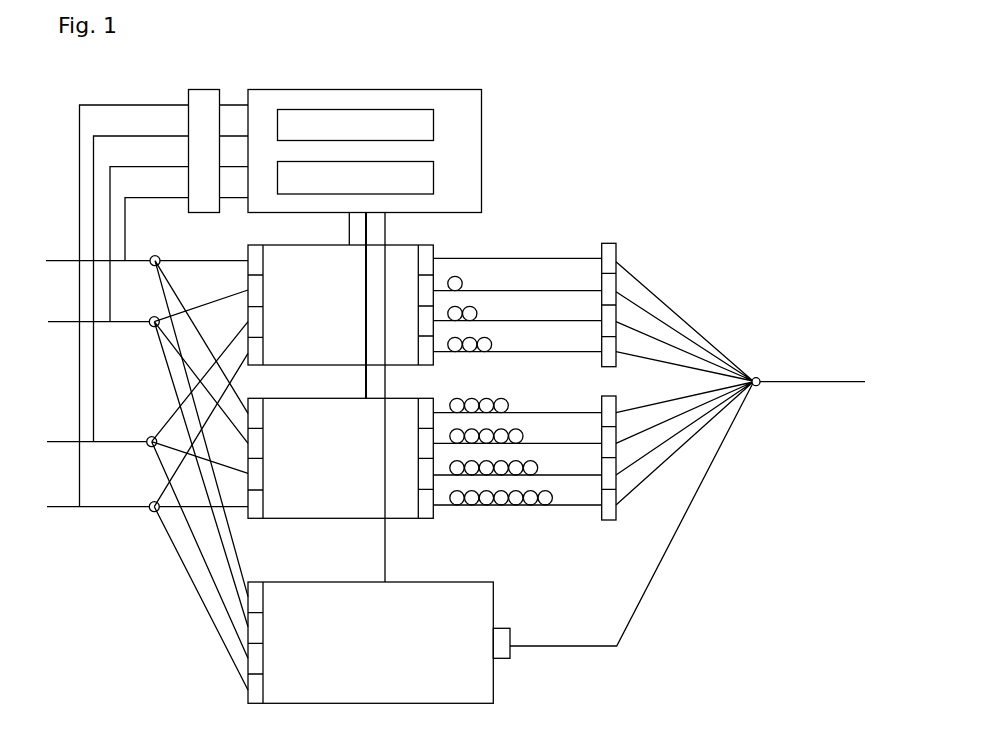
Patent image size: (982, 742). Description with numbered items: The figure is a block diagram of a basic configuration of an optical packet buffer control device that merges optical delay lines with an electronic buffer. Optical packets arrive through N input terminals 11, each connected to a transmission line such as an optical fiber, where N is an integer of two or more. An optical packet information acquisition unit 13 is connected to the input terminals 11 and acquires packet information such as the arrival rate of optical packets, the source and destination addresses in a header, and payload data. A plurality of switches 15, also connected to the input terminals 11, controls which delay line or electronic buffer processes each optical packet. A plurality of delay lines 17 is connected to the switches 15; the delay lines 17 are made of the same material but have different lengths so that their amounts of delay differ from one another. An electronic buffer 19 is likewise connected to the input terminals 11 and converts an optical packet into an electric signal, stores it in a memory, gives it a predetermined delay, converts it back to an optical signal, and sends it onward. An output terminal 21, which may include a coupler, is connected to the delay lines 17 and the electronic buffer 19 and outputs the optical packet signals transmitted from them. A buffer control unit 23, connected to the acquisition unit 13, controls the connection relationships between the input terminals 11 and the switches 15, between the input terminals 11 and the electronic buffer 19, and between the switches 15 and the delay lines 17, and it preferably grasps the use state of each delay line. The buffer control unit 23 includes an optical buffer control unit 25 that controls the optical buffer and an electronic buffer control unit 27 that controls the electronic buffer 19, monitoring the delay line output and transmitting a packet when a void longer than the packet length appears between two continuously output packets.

The input terminals 11 is at (160, 259).
The optical packet information acquisition unit 13 is at (220, 93).
The switches 15 is at (258, 260).
The delay lines 17 is at (523, 412).
The electronic buffer 19 is at (494, 605).
The output terminal 21 is at (762, 378).
The buffer control unit 23 is at (482, 103).
The optical buffer control unit 25 is at (434, 125).
The electronic buffer control unit 27 is at (434, 178).